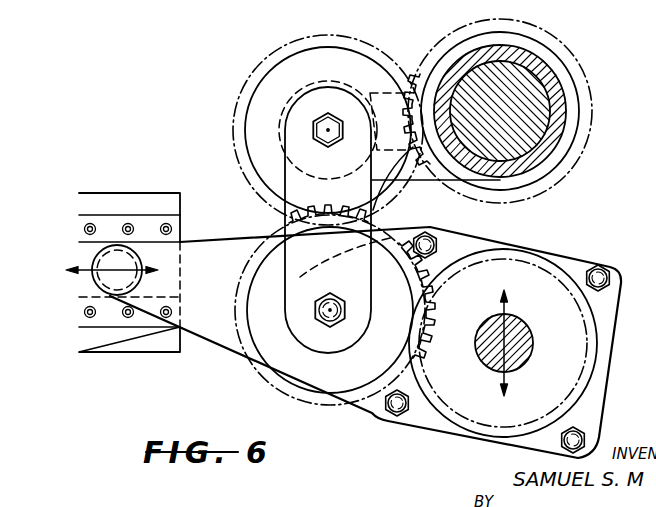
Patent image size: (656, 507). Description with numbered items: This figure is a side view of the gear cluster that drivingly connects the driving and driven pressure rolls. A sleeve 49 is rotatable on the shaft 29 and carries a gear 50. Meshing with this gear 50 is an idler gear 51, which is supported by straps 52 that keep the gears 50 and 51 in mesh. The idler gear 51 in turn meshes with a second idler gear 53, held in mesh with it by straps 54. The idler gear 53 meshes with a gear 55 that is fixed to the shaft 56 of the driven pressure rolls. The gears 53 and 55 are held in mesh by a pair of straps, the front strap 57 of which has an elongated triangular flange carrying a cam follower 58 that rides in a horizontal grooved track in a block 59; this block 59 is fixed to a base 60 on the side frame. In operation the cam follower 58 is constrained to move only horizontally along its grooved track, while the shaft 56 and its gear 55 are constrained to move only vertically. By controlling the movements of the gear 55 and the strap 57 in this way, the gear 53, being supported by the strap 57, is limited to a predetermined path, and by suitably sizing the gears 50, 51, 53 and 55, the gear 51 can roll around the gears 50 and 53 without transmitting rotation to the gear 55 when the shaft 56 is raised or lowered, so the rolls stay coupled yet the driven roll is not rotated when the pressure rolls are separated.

The shaft 29 is at (548, 110).
The sleeve 49 is at (550, 152).
The gear 50 is at (568, 52).
The idler gear 51 is at (370, 44).
The straps 52 is at (372, 92).
The second idler gear 53 is at (280, 388).
The straps 54 is at (283, 211).
The gear 55 is at (592, 332).
The shaft 56 is at (492, 364).
The front strap 57 is at (213, 345).
The cam follower 58 is at (97, 283).
The block 59 is at (79, 235).
The base 60 is at (80, 202).